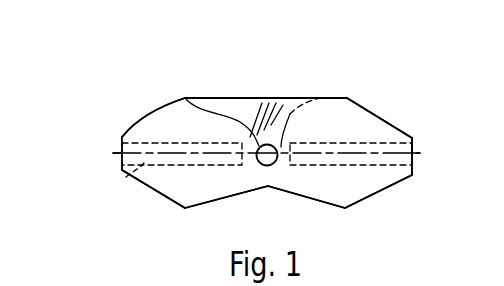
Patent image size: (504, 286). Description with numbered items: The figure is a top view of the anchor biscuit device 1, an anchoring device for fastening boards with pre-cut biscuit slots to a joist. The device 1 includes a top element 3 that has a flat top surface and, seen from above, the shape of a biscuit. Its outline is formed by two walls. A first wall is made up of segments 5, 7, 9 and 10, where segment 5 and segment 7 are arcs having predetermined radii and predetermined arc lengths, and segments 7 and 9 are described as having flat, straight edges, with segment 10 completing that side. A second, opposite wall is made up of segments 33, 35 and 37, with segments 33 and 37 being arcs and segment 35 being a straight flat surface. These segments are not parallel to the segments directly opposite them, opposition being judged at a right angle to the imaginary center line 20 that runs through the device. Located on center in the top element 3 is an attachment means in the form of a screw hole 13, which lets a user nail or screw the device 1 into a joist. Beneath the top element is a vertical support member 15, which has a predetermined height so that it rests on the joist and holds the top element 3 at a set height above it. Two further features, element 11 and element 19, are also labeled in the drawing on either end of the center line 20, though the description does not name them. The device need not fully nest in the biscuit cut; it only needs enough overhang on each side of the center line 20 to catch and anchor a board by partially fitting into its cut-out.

The anchor biscuit device 1 is at (357, 81).
The top element 3 is at (358, 191).
The wall segment 5 is at (401, 181).
The wall segment 7 is at (300, 196).
The wall segment 9 is at (229, 198).
The wall segment 10 is at (154, 189).
The bore 11 is at (419, 153).
The screw hole 13 is at (185, 98).
The vertical support member 15 is at (126, 177).
The bore 19 is at (114, 152).
The imaginary center line 20 is at (320, 98).
The wall segment 33 is at (151, 113).
The wall segment 35 is at (252, 98).
The wall segment 37 is at (386, 117).